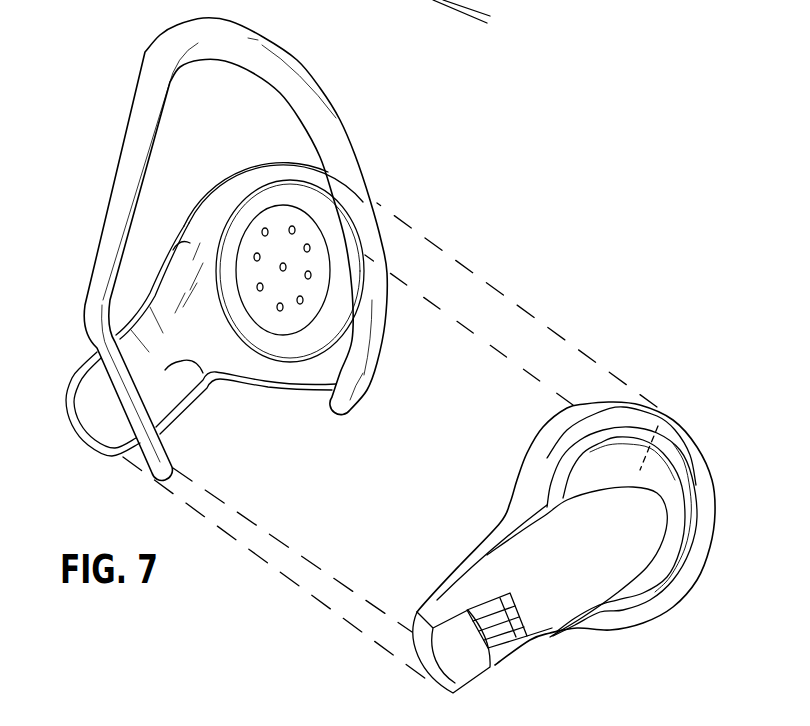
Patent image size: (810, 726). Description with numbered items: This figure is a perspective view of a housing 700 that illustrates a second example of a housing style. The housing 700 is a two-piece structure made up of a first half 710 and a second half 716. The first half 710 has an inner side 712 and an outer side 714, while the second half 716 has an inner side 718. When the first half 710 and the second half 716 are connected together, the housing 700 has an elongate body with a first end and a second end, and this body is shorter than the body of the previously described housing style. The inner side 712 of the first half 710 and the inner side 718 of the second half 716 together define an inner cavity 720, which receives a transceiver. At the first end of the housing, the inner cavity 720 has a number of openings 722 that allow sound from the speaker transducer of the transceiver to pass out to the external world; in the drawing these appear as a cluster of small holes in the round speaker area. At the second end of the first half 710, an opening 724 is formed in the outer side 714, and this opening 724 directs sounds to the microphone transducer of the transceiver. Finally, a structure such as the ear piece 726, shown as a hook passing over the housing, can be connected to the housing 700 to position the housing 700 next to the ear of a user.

The housing 700 is at (558, 246).
The first half 710 is at (498, 520).
The inner side of first half 712 is at (650, 417).
The outer side of first half 714 is at (580, 583).
The second half 716 is at (220, 178).
The inner side of second half 718 is at (203, 373).
The inner cavity 720 is at (310, 227).
The openings 722 is at (312, 296).
The opening 724 is at (480, 617).
The ear piece 726 is at (130, 147).